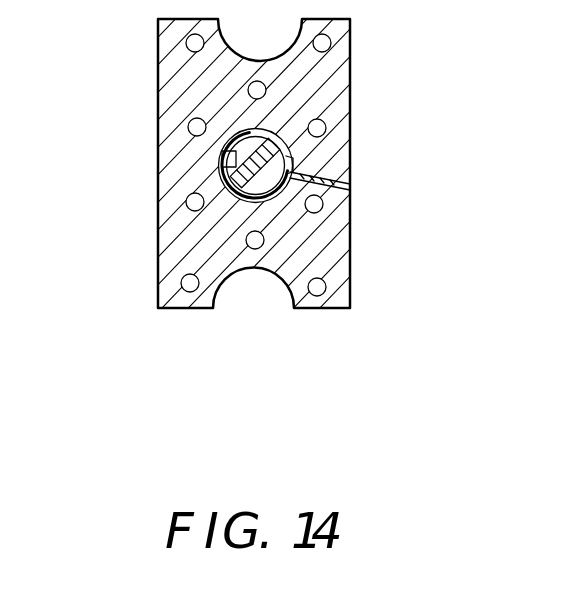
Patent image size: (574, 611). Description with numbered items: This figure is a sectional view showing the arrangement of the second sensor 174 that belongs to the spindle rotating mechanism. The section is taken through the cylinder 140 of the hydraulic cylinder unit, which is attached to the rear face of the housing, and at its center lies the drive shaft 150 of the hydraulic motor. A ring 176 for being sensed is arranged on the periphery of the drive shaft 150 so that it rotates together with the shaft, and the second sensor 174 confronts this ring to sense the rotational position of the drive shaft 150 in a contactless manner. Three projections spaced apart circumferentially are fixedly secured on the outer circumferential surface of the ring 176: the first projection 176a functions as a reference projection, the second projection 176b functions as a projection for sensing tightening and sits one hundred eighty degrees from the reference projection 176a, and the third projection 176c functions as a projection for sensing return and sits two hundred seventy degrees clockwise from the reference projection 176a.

The cylinder 140 is at (323, 72).
The drive shaft 150 is at (238, 170).
The second sensor 174 is at (293, 176).
The ring 176 is at (258, 186).
The first projection 176a is at (294, 163).
The second projection 176b is at (223, 158).
The third projection 176c is at (268, 128).